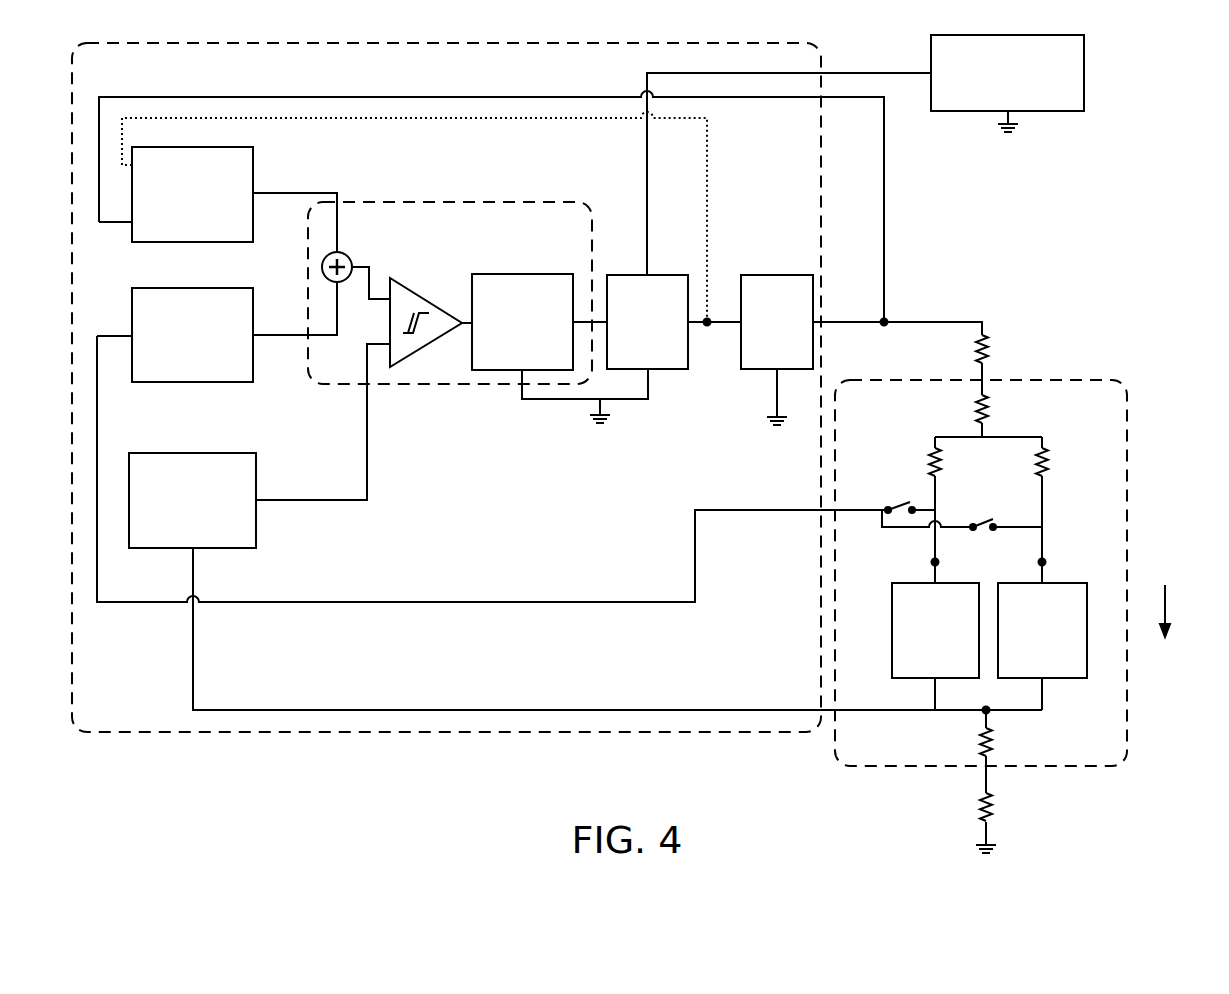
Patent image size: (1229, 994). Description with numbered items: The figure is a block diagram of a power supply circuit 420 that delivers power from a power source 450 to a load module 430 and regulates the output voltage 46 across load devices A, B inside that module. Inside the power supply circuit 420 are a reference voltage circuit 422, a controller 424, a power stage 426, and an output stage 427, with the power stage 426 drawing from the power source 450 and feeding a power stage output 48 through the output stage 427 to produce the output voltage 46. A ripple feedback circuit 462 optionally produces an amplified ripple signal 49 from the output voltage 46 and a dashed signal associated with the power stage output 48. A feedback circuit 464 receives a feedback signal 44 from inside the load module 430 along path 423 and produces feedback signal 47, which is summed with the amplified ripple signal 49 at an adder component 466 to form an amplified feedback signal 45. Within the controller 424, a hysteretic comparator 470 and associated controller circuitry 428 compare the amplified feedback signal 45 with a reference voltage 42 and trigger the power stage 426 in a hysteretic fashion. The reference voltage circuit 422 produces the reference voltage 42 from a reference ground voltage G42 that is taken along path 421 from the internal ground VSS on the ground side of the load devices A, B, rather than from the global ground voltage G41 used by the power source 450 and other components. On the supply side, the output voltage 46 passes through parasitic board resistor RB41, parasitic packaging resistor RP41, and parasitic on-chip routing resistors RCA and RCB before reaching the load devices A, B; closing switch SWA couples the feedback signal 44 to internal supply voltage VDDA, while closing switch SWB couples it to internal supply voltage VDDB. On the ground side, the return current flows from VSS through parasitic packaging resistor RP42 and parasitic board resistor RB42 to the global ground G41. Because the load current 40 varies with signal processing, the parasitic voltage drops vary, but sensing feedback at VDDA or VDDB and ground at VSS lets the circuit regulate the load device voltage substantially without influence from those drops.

The power supply circuit 420 is at (446, 387).
The power source 450 is at (865, 155).
The ground voltage G41 is at (1018, 125).
The ripple feedback circuit 462 is at (491, 206).
The amplified ripple signal 49 is at (288, 192).
The adder component 466 is at (322, 266).
The amplified feedback signal 45 is at (370, 264).
The controller 424 is at (450, 293).
The hysteretic comparator 470 is at (420, 352).
The controller circuitry 428 is at (539, 322).
The power stage 426 is at (647, 322).
The power stage output 48 is at (714, 312).
The output stage 427 is at (777, 322).
The output voltage 46 is at (886, 320).
The feedback circuit 464 is at (175, 335).
The feedback signal 47 is at (287, 340).
The reference voltage circuit 422 is at (192, 500).
The reference voltage 42 is at (368, 467).
The feedback signal 44 is at (568, 598).
The path 423 is at (728, 518).
The reference ground voltage G42 is at (555, 712).
The path 421 is at (736, 722).
The load module 430 is at (981, 573).
The parasitic board resistor RB41 is at (1007, 365).
The parasitic packaging resistor RP41 is at (988, 421).
The parasitic on-chip routing resistor RCA is at (954, 515).
The parasitic on-chip routing resistor RCB is at (1065, 515).
The switch SWA is at (905, 495).
The switch SWB is at (962, 515).
The internal supply voltage VDDA is at (930, 562).
The internal supply voltage VDDB is at (1038, 562).
The load devices A is at (935, 646).
The load devices B is at (1042, 646).
The internal ground VSS is at (980, 712).
The parasitic packaging resistor RP42 is at (1011, 760).
The parasitic board resistor RB42 is at (1012, 807).
The load current 40 is at (1163, 566).